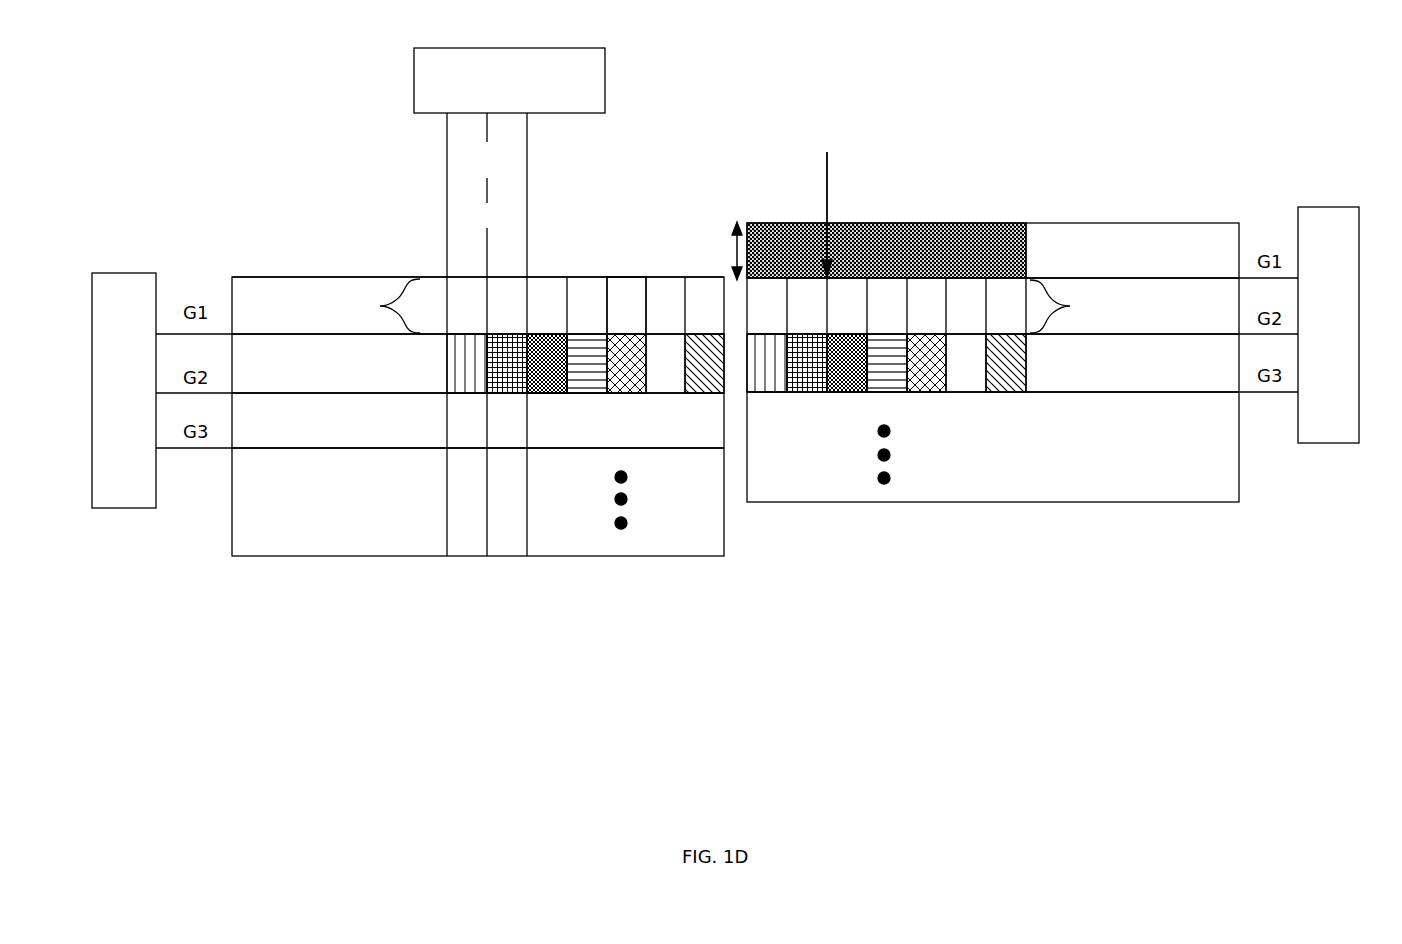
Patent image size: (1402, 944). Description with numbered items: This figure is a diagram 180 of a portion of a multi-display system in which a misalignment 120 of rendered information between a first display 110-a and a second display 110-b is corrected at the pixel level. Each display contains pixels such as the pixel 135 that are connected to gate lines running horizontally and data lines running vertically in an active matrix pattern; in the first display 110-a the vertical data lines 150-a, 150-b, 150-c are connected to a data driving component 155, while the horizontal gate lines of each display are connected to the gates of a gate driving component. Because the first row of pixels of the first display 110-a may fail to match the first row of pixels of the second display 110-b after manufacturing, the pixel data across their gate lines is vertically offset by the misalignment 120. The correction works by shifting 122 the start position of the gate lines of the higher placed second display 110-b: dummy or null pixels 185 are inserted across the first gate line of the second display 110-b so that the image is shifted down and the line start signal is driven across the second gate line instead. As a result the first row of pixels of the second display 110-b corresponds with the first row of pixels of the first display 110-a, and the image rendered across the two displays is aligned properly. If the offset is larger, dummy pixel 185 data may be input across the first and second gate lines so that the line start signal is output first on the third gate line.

The first display 110-a is at (362, 557).
The second display 110-b is at (1190, 503).
The misalignment 120 is at (737, 262).
The shifting 122 is at (827, 172).
The pixel 135 is at (628, 288).
The first data line 150-a is at (438, 334).
The second data line 150-b is at (488, 334).
The third data line 150-c is at (540, 334).
The data driving component 155 is at (527, 92).
The memory system 180 is at (1318, 100).
The dummy pixels 185 is at (903, 260).